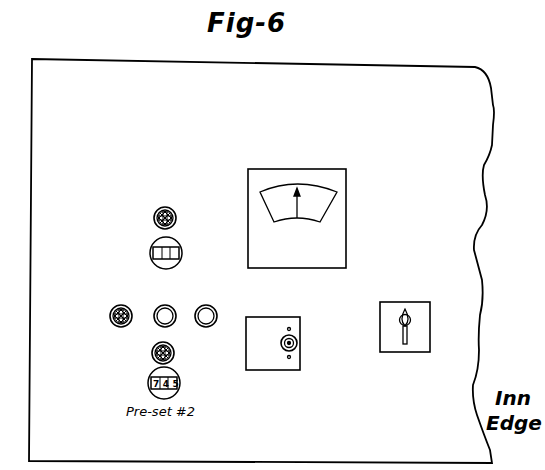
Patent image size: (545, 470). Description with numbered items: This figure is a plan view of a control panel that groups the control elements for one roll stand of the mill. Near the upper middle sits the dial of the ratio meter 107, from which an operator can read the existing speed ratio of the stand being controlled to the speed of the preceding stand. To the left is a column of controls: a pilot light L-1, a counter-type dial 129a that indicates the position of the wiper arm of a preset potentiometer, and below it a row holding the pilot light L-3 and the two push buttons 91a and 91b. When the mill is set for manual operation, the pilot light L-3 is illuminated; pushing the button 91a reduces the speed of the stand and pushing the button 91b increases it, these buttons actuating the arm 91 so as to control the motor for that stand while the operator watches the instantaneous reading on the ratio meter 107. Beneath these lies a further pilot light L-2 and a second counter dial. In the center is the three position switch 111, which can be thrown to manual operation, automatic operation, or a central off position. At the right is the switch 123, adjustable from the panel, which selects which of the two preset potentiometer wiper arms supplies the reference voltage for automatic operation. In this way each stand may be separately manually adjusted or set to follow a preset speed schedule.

The ratio meter 107 is at (345, 231).
The indicator lamp L-1 is at (170, 207).
The dial 129a is at (150, 250).
The arm 91 is at (111, 307).
The pilot light L-3 is at (115, 325).
The push button 91a is at (155, 312).
The push button 91b is at (215, 316).
The manual indicator lamp L-2 is at (174, 355).
The three position switch 111 is at (297, 343).
The switch 123 is at (411, 341).